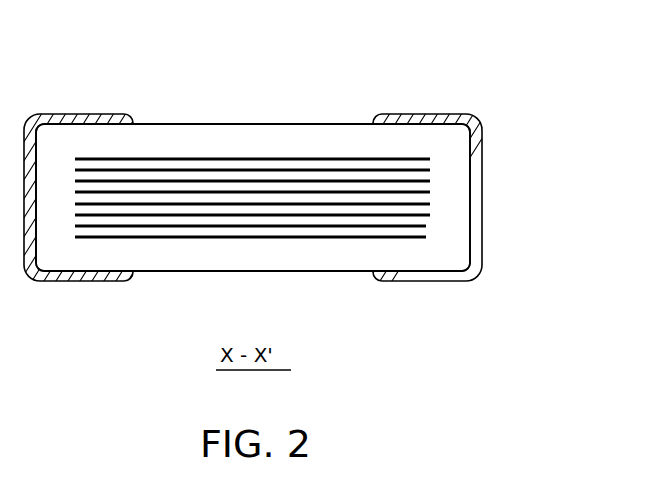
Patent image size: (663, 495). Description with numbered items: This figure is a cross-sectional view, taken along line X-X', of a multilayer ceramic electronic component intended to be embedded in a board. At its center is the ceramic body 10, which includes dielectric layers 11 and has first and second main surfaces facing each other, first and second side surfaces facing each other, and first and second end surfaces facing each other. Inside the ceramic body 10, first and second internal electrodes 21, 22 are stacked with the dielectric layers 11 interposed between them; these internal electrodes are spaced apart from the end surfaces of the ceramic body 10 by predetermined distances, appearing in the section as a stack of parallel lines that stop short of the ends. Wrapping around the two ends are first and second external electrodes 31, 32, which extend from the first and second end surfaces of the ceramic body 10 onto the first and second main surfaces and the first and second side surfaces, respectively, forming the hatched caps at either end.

The ceramic body 10 is at (252, 124).
The dielectric layers 11 is at (423, 211).
The first internal electrode 21 is at (425, 223).
The second internal electrode 22 is at (425, 238).
The first external electrode 31 is at (80, 118).
The second external electrode 32 is at (430, 118).